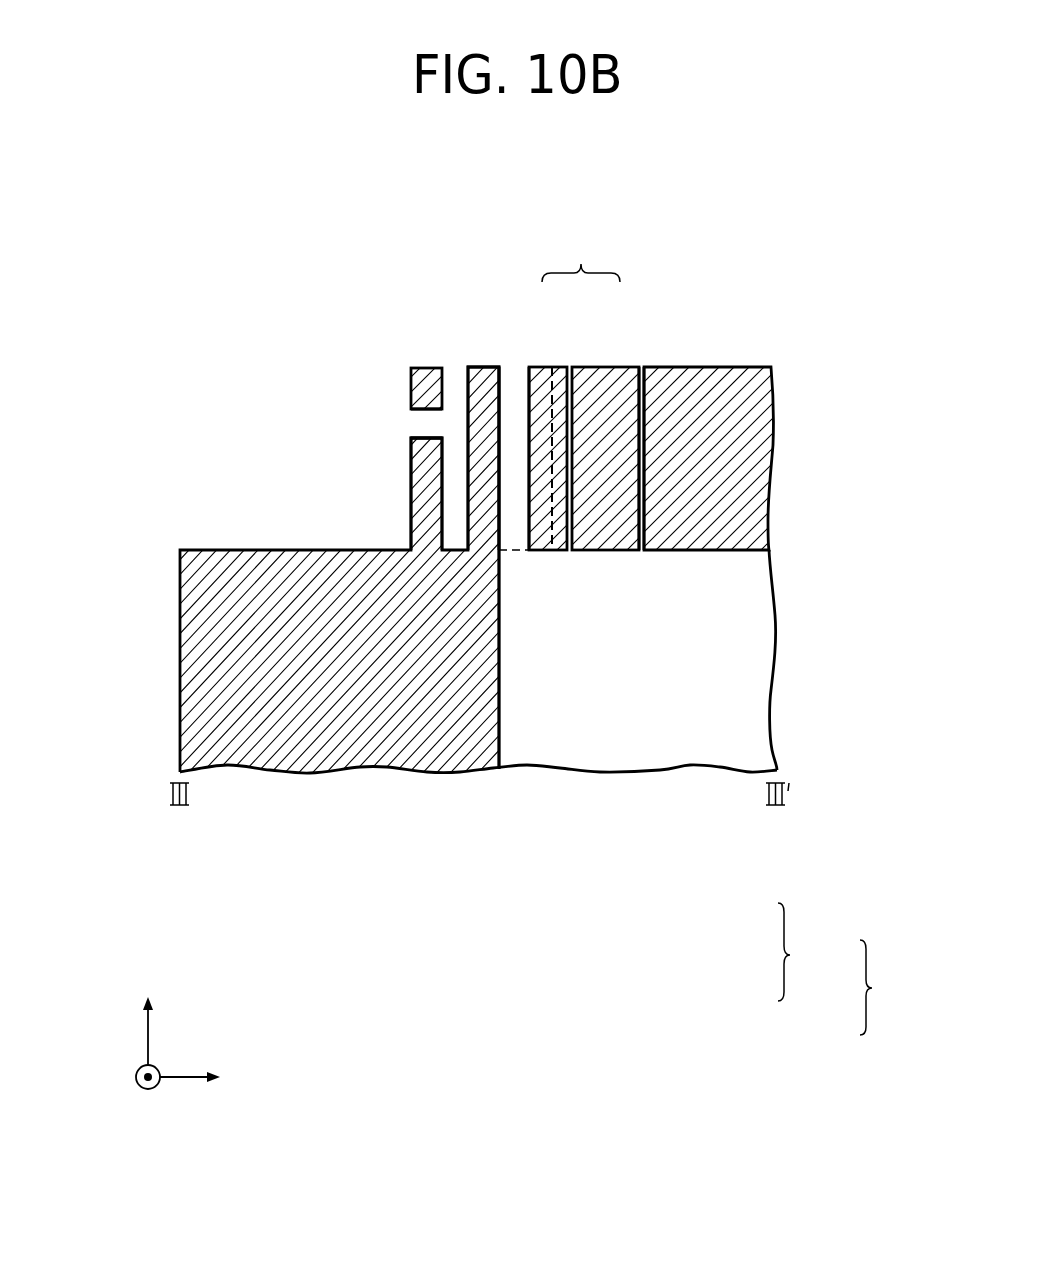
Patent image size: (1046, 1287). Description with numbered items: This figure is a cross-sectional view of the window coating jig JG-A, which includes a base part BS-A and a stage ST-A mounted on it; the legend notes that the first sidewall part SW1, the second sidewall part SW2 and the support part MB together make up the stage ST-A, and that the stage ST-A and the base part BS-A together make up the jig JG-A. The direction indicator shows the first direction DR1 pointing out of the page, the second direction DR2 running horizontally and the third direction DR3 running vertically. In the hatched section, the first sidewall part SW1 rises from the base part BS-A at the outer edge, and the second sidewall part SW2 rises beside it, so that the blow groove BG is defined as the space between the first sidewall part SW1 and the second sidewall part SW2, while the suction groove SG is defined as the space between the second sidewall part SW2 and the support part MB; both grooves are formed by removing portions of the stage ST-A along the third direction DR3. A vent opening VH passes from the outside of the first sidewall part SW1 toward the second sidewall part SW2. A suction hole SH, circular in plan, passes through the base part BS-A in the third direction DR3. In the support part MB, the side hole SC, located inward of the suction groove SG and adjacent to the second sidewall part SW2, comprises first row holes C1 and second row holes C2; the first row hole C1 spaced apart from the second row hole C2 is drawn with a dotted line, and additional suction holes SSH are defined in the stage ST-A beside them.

The base part BS-A is at (193, 660).
The first sidewall part SW1 is at (420, 503).
The second sidewall part SW2 is at (485, 367).
The blow groove BG is at (455, 390).
The vent opening VH is at (427, 438).
The suction groove SG is at (515, 390).
The first row holes C1 is at (552, 367).
The second row holes C2 is at (570, 367).
The side hole SC is at (581, 255).
The additional suction holes SSH is at (642, 367).
The support part MB is at (728, 385).
The suction hole SH is at (507, 724).
The stage ST-A is at (786, 952).
The window coating jig JG-A is at (861, 990).
The first direction DR1 is at (148, 1093).
The second direction DR2 is at (213, 1076).
The third direction DR3 is at (149, 1016).